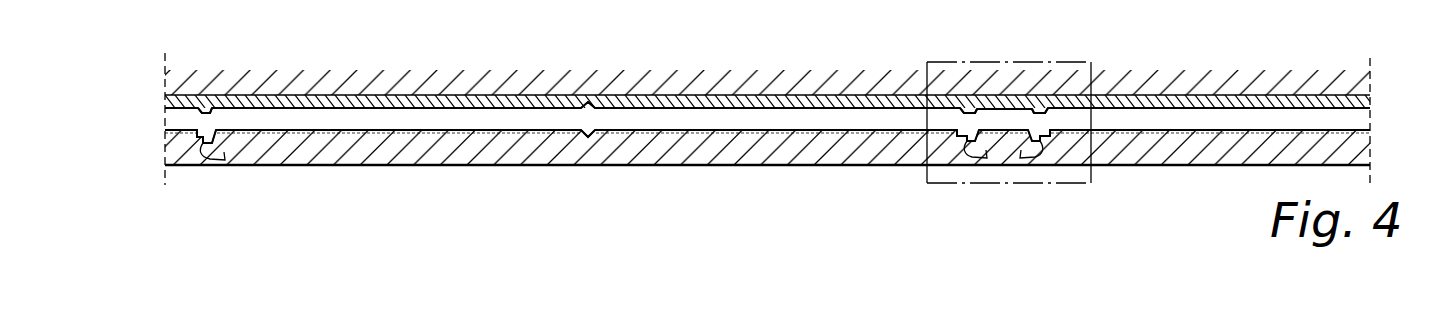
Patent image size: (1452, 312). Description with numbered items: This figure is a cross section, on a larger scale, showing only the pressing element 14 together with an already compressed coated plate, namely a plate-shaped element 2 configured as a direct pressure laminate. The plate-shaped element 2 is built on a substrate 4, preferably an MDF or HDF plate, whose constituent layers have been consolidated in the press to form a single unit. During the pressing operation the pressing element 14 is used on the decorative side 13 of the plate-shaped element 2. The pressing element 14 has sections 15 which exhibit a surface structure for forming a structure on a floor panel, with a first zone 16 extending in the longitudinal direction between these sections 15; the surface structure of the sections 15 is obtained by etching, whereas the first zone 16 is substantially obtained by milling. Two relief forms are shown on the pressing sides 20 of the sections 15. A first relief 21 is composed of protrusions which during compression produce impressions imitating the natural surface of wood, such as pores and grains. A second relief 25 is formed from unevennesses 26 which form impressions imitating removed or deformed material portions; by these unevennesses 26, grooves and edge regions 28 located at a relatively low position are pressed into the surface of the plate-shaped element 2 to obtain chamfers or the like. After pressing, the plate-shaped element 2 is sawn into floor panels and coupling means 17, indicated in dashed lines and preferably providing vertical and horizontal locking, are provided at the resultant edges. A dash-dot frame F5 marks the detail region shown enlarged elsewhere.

The plate-shaped element 2 is at (766, 170).
The substrate 4 is at (1343, 151).
The decorative side 13 is at (1342, 128).
The pressing element 14 is at (732, 113).
The section 15 is at (736, 106).
The first zone 16 is at (188, 110).
The coupling means 17 is at (208, 165).
The pressing side 20 is at (813, 124).
The first relief 21 is at (407, 124).
The second relief 25 is at (229, 120).
The unevenness 26 is at (600, 109).
The edge region 28 is at (218, 132).
The detail area of Fig. 5 F5 is at (992, 183).